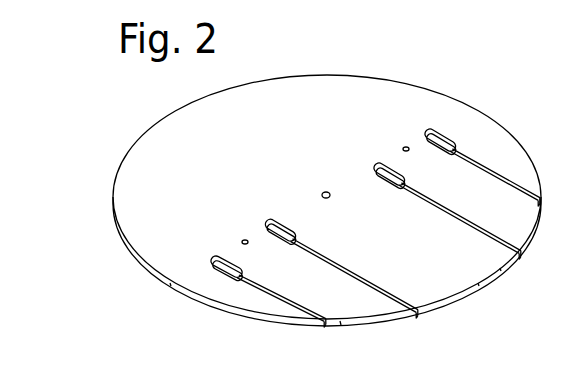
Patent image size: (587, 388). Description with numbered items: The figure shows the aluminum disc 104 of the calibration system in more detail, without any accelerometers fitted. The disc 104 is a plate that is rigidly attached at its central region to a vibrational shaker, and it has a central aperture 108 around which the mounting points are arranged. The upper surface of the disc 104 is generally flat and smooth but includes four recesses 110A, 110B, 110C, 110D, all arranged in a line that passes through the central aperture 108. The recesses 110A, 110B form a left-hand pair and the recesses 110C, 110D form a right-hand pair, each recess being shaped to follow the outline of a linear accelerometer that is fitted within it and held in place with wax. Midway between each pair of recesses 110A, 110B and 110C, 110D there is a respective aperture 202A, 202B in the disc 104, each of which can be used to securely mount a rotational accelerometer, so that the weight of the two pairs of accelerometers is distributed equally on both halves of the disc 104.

The aluminum disc 104 is at (110, 141).
The central aperture 108 is at (325, 192).
The recess 110A is at (215, 265).
The recess 110B is at (282, 222).
The recess 110C is at (383, 162).
The recess 110D is at (452, 135).
The aperture 202A is at (243, 241).
The aperture 202B is at (406, 146).